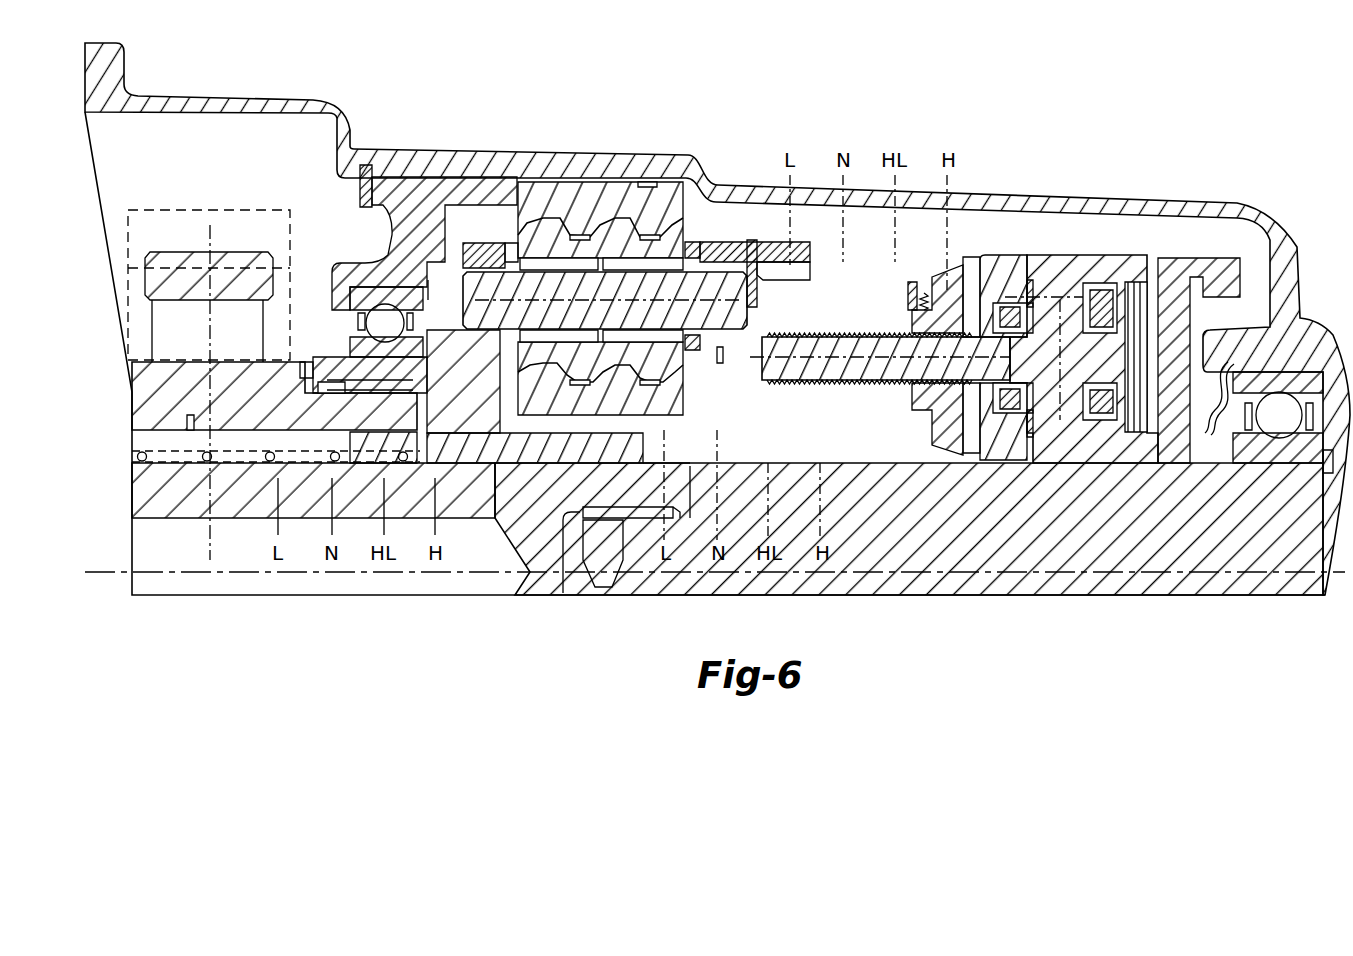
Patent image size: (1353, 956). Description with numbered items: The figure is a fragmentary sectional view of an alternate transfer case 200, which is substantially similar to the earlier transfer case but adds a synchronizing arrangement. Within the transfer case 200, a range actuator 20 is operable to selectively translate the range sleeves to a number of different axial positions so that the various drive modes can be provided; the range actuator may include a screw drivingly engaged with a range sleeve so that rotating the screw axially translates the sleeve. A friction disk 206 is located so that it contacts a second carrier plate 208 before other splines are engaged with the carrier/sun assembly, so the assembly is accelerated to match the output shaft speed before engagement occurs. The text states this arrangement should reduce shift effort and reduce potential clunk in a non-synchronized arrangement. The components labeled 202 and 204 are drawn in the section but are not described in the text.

The range actuator 20 is at (1086, 242).
The transfer case 200 is at (1008, 139).
The retainer 202 is at (797, 272).
The clutch assembly 204 is at (953, 272).
The friction disk 206 is at (907, 293).
The second carrier plate 208 is at (710, 262).